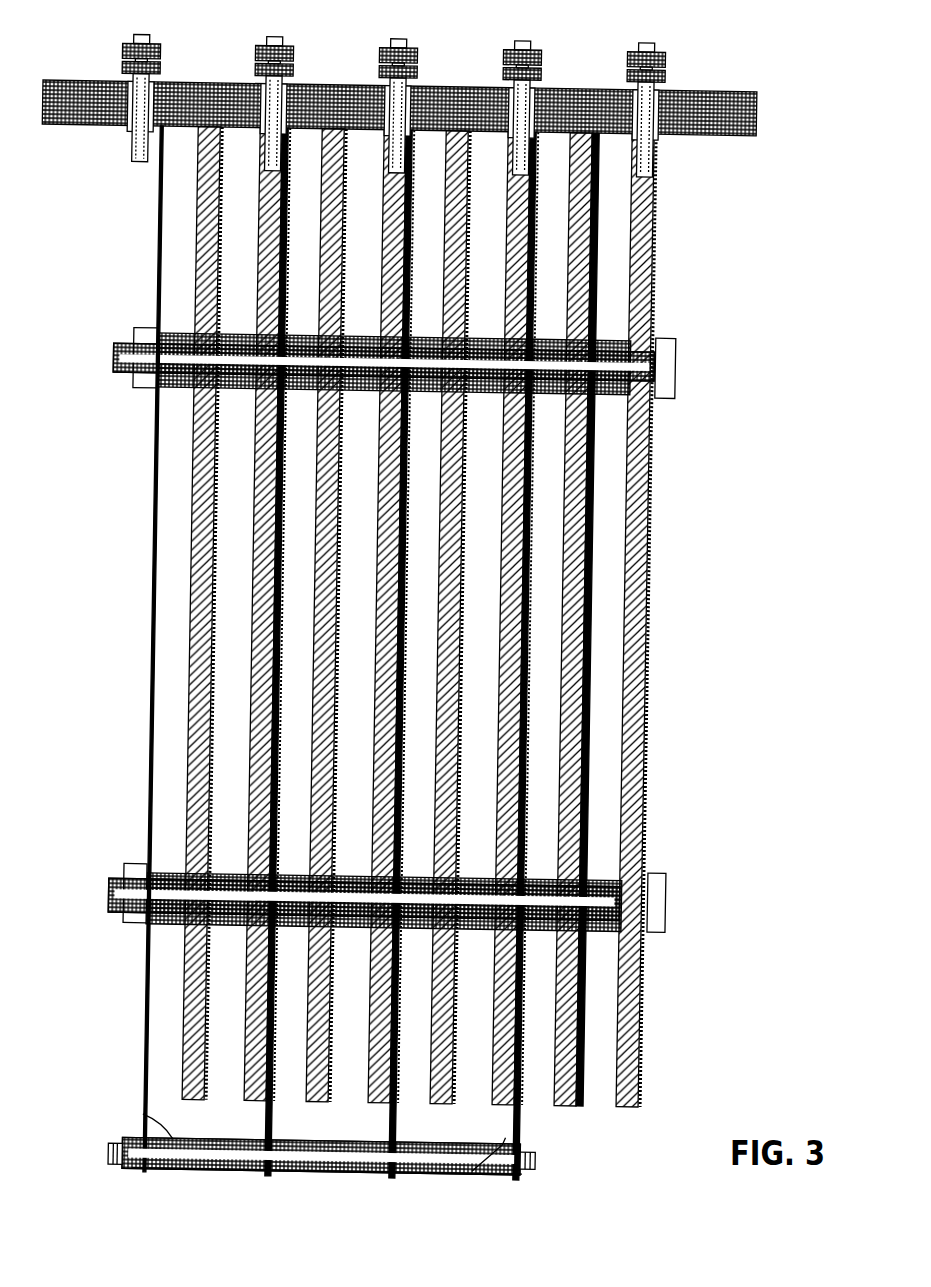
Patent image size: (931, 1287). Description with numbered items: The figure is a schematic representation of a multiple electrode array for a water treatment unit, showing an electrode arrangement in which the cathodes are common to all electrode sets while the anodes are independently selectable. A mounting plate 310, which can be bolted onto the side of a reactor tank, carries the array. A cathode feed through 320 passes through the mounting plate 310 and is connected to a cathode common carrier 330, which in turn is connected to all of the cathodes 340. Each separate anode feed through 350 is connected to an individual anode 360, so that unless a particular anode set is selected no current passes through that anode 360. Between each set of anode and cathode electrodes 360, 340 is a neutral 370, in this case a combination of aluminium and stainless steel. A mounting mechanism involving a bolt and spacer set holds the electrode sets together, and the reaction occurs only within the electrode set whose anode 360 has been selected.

The mounting plate 310 is at (733, 118).
The cathode feed through 320 is at (137, 588).
The cathode common carrier 330 is at (120, 1150).
The cathode 340 is at (233, 1162).
The anode feed through 350 is at (460, 90).
The anode 360 is at (288, 160).
The neutral 370 is at (325, 517).